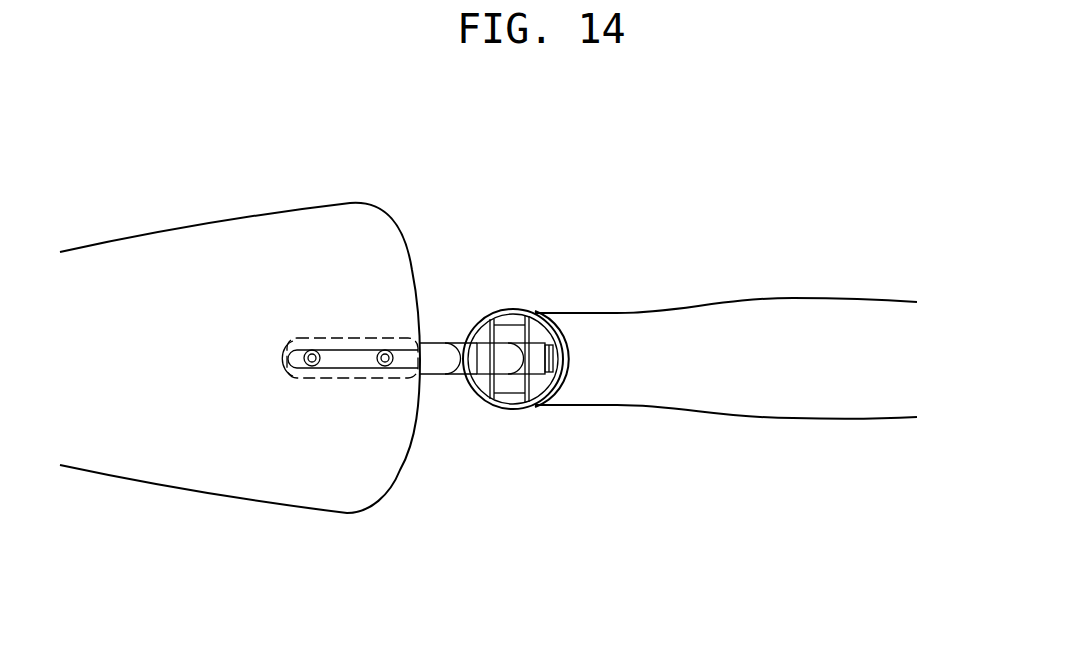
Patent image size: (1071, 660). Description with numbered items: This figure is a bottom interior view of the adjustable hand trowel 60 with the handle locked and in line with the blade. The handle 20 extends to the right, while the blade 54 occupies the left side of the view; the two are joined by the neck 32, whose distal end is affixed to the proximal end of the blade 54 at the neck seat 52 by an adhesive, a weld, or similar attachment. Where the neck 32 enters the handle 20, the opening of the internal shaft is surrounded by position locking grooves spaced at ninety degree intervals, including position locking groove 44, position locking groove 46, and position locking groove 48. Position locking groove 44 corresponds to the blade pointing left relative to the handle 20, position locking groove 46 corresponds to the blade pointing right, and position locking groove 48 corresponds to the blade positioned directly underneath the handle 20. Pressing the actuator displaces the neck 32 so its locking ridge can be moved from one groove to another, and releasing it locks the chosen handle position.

The adjustable hand trowel 60 is at (160, 93).
The handle 20 is at (726, 301).
The neck 32 is at (452, 413).
The position locking groove 44 is at (516, 321).
The position locking groove 46 is at (527, 422).
The position locking groove 48 is at (550, 365).
The neck seat 52 is at (350, 335).
The blade 54 is at (240, 400).